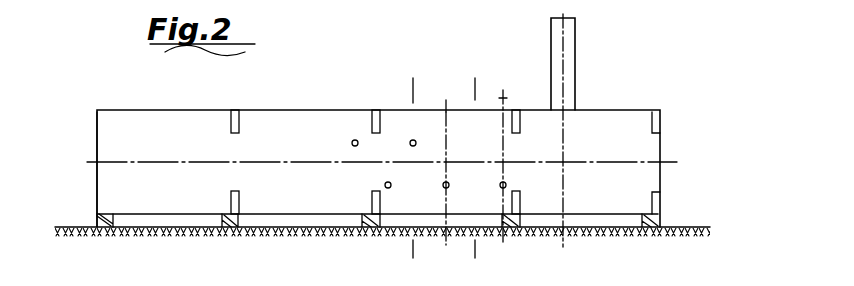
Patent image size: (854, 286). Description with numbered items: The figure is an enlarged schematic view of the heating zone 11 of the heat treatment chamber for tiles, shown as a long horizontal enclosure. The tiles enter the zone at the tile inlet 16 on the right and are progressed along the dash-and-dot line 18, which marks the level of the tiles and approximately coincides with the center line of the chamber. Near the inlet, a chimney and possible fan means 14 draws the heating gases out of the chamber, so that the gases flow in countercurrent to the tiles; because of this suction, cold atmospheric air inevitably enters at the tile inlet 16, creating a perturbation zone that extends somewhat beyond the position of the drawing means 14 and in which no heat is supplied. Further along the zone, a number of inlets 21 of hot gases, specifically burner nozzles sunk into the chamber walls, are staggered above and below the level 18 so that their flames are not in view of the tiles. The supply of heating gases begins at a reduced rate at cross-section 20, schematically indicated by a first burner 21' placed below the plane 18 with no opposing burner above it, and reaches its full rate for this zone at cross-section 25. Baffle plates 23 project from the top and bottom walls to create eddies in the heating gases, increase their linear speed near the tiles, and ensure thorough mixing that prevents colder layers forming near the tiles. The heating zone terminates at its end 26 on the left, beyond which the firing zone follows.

The heating zone 11 is at (298, 186).
The means for drawing the heating gases 14 is at (576, 73).
The tile inlet 16 is at (672, 143).
The level of the tiles 18 is at (112, 162).
The cross-section 20 is at (503, 98).
The inlets of hot gases 21 is at (377, 169).
The first burner 21' is at (521, 228).
The baffle plates 23 is at (243, 124).
The cross-section 25 is at (446, 100).
The end of the zone 26 is at (97, 132).